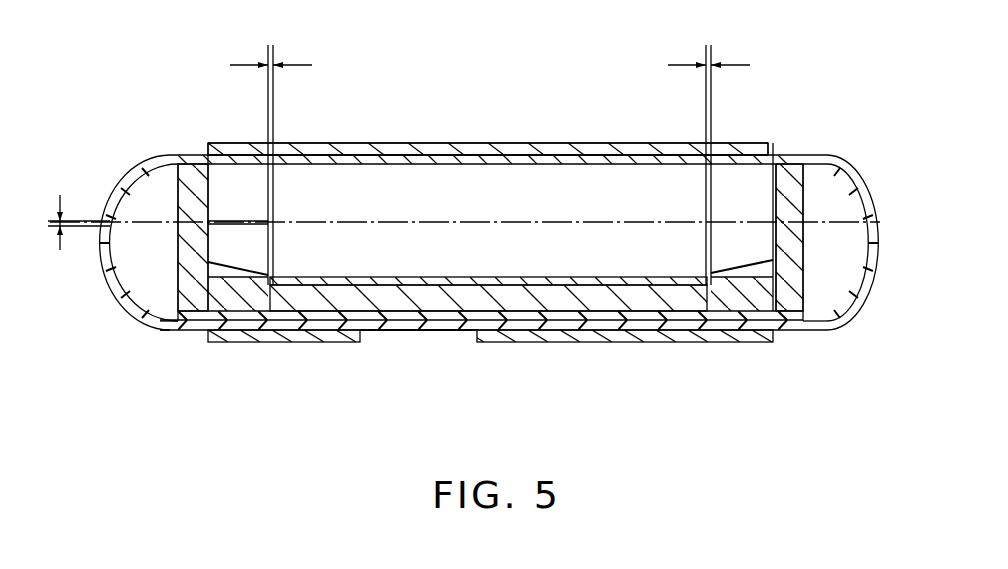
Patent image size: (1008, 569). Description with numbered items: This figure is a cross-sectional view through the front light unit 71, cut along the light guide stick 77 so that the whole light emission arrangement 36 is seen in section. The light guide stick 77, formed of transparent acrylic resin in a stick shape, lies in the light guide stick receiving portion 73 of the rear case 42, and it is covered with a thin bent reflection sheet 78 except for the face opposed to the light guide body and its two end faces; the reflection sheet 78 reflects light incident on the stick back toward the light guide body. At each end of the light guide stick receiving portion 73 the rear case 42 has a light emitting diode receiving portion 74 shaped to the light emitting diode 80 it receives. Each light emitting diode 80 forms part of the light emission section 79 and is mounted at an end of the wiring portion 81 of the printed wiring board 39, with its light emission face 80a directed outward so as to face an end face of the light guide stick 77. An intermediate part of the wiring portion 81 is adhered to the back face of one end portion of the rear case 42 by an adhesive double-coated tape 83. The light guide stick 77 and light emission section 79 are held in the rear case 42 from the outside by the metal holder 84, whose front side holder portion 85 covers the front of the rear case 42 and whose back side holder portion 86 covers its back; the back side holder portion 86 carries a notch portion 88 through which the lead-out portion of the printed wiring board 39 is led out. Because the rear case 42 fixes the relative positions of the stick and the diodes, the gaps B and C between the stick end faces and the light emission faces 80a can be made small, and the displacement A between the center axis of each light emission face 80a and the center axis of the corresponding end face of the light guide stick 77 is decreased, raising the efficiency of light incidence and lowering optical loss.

The outer tube 36 is at (203, 141).
The printed wiring board 39 is at (137, 331).
The wiring portion 81 is at (862, 307).
The light emission section 79 is at (823, 336).
The adhesive double-coated tape 83 is at (400, 313).
The reflection sheet 78 is at (376, 150).
The holder 84 is at (502, 136).
The front side holder portion 85 is at (566, 155).
The light guide stick receiving portion 73 is at (692, 282).
The light emitting diode 80 is at (228, 175).
The light emission face 80a is at (275, 181).
The light emitting diode receiving portion 74 is at (216, 272).
The rear case 42 is at (795, 243).
The end assembly 71 is at (784, 178).
The light guide stick 77 is at (451, 175).
The back side holder portion 86 is at (282, 342).
The notch portion 88 is at (478, 334).
The displacement A is at (70, 222).
The gap B is at (271, 43).
The gap C is at (709, 43).